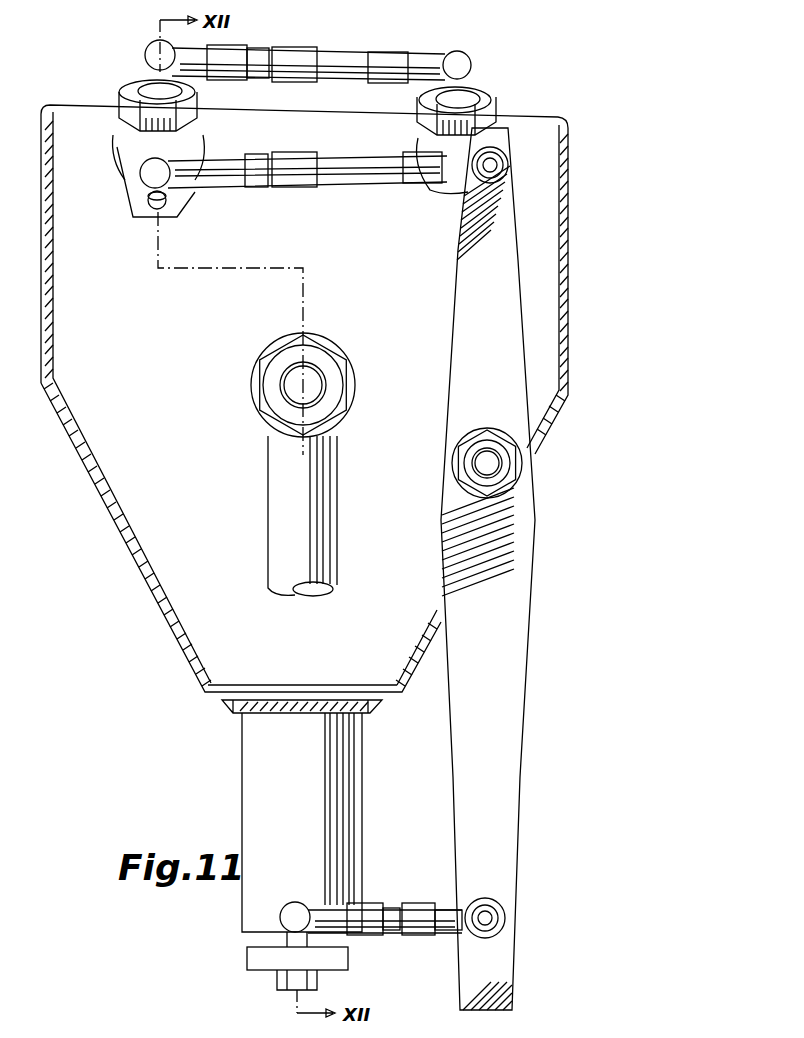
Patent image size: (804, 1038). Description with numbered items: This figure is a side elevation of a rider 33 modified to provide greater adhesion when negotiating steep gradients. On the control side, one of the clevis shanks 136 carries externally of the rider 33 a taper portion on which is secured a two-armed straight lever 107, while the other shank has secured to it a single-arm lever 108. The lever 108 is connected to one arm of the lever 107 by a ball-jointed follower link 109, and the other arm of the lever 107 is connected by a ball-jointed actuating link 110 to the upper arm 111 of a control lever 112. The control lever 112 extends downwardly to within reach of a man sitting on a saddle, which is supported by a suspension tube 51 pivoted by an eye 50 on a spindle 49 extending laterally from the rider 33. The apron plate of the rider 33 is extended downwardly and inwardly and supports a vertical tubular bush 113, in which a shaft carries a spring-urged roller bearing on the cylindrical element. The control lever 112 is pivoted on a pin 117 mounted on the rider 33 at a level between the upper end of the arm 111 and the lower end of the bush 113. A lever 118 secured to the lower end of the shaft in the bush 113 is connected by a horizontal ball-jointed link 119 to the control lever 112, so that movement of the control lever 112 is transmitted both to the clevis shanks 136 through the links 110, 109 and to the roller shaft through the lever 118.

The rider 33 is at (568, 270).
The spindle 49 is at (313, 384).
The eye 50 is at (322, 338).
The suspension tube 51 is at (278, 513).
The two-armed straight lever 107 is at (145, 190).
The single-arm lever 108 is at (468, 78).
The ball-jointed follower link 109 is at (338, 58).
The ball-jointed actuating link 110 is at (348, 177).
The upper arm 111 is at (462, 308).
The control lever 112 is at (488, 749).
The vertical tubular bush 113 is at (302, 822).
The pin 117 is at (487, 461).
The lever 118 is at (340, 968).
The horizontal ball-jointed link 119 is at (388, 905).
The shank 136 is at (155, 93).